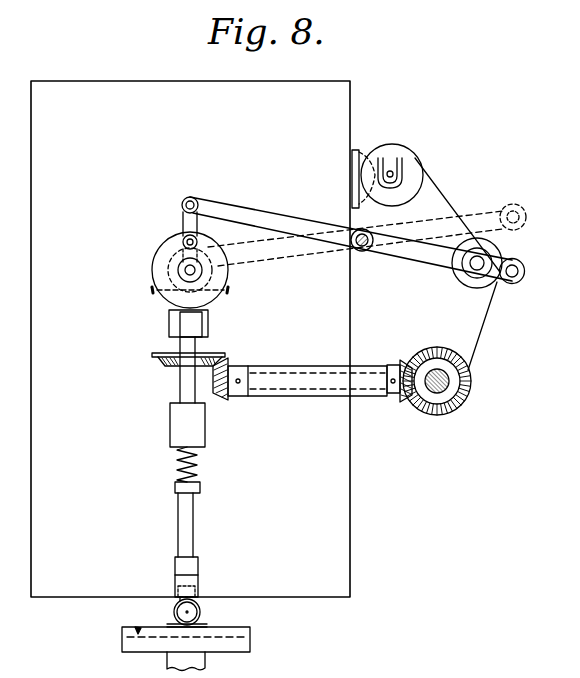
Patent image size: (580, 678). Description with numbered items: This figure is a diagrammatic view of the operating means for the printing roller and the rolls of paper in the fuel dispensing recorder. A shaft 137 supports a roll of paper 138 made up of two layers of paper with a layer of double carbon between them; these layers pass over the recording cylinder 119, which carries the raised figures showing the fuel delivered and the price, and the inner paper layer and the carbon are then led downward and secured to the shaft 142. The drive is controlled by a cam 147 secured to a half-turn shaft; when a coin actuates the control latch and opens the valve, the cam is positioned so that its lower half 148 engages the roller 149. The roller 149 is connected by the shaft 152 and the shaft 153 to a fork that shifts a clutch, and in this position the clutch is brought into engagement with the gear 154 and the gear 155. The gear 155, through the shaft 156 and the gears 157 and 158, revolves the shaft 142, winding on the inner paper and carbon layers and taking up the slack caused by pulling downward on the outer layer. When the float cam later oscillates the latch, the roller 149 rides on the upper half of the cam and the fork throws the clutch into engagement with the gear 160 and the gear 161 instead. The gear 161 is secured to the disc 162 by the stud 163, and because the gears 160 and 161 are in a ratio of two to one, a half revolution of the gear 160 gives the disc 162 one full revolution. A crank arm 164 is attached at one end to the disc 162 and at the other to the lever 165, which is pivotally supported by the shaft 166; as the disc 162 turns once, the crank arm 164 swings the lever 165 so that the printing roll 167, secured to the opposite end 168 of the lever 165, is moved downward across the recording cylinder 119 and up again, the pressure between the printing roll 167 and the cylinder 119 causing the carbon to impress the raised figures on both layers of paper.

The recording cylinder 119 is at (474, 285).
The shaft 137 is at (363, 197).
The roll of paper 138 is at (452, 196).
The shaft 142 is at (443, 381).
The cam 147 is at (240, 643).
The lower half 148 is at (138, 628).
The roller 149 is at (202, 614).
The shaft 152 is at (187, 518).
The shaft 153 is at (185, 566).
The gear 154 is at (156, 355).
The gear 155 is at (223, 401).
The shaft 156 is at (362, 372).
The gear 157 is at (404, 400).
The gear 158 is at (452, 404).
The gear 160 is at (216, 299).
The gear 161 is at (168, 250).
The disc 162 is at (213, 271).
The stud 163 is at (187, 272).
The crank arm 164 is at (182, 213).
The lever 165 is at (256, 213).
The shaft 166 is at (365, 251).
The printing roll 167 is at (524, 267).
The opposite end 168 is at (514, 283).